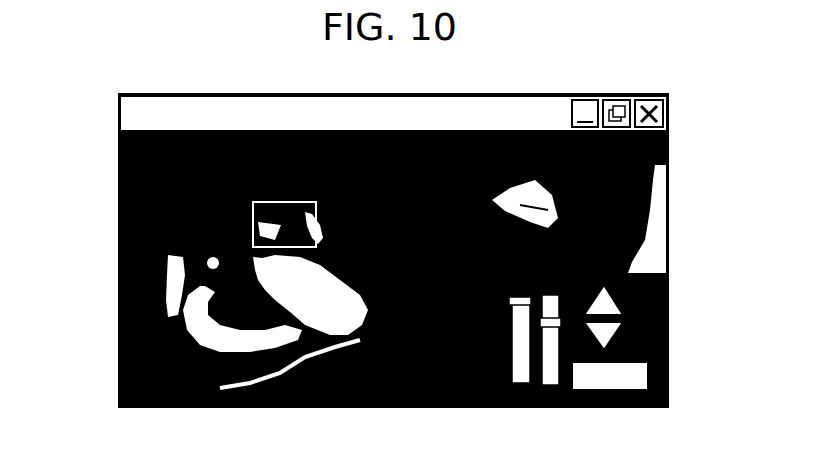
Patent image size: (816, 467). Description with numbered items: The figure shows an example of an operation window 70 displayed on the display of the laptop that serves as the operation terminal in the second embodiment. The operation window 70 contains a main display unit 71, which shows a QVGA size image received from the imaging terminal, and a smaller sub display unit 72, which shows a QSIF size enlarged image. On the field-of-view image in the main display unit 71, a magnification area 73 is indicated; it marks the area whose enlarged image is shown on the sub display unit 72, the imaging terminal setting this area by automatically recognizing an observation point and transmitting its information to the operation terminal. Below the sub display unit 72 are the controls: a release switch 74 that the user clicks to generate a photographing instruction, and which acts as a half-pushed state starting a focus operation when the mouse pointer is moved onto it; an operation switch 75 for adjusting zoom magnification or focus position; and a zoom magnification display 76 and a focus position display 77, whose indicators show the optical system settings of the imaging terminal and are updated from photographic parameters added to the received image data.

The operation window 70 is at (514, 104).
The main display unit 71 is at (136, 163).
The sub display unit 72 is at (655, 191).
The magnification area 73 is at (253, 222).
The release switch 74 is at (645, 372).
The operation switch 75 is at (632, 314).
The zoom magnification display 76 is at (498, 398).
The focus position display 77 is at (562, 396).